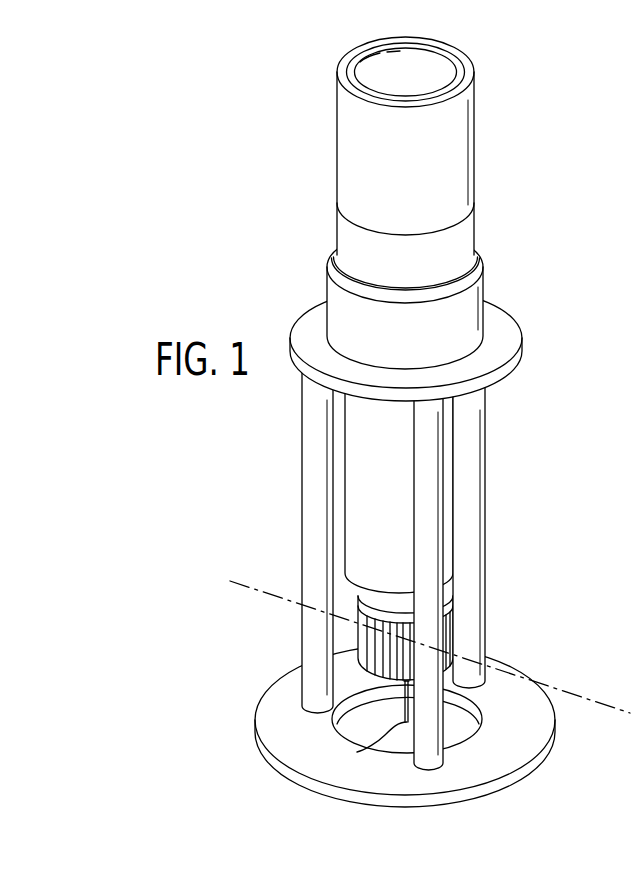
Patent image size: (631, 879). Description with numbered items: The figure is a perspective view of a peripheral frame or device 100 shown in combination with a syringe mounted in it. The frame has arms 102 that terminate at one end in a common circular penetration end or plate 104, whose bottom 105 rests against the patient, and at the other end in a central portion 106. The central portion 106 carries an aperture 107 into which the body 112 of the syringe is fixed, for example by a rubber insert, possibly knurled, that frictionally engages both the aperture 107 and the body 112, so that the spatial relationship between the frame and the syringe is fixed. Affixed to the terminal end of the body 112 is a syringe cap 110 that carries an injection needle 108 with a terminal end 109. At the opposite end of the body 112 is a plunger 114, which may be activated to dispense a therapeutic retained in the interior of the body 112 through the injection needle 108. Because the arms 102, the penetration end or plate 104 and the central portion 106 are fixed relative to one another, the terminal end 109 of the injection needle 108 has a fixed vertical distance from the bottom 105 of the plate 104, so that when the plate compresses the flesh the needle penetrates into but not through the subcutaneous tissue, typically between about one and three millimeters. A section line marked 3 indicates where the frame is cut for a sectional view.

The peripheral frame or device 100 is at (163, 480).
The arms 102 is at (302, 537).
The penetration end or plate 104 is at (256, 712).
The bottom of the penetration end or plate 105 is at (457, 803).
The central portion 106 is at (521, 333).
The aperture 107 is at (443, 284).
The injection needle 108 is at (404, 699).
The terminal end 109 is at (362, 748).
The syringe cap 110 is at (377, 652).
The body 112 is at (357, 495).
The plunger 114 is at (337, 152).
The section line 3- 3 is at (270, 595).